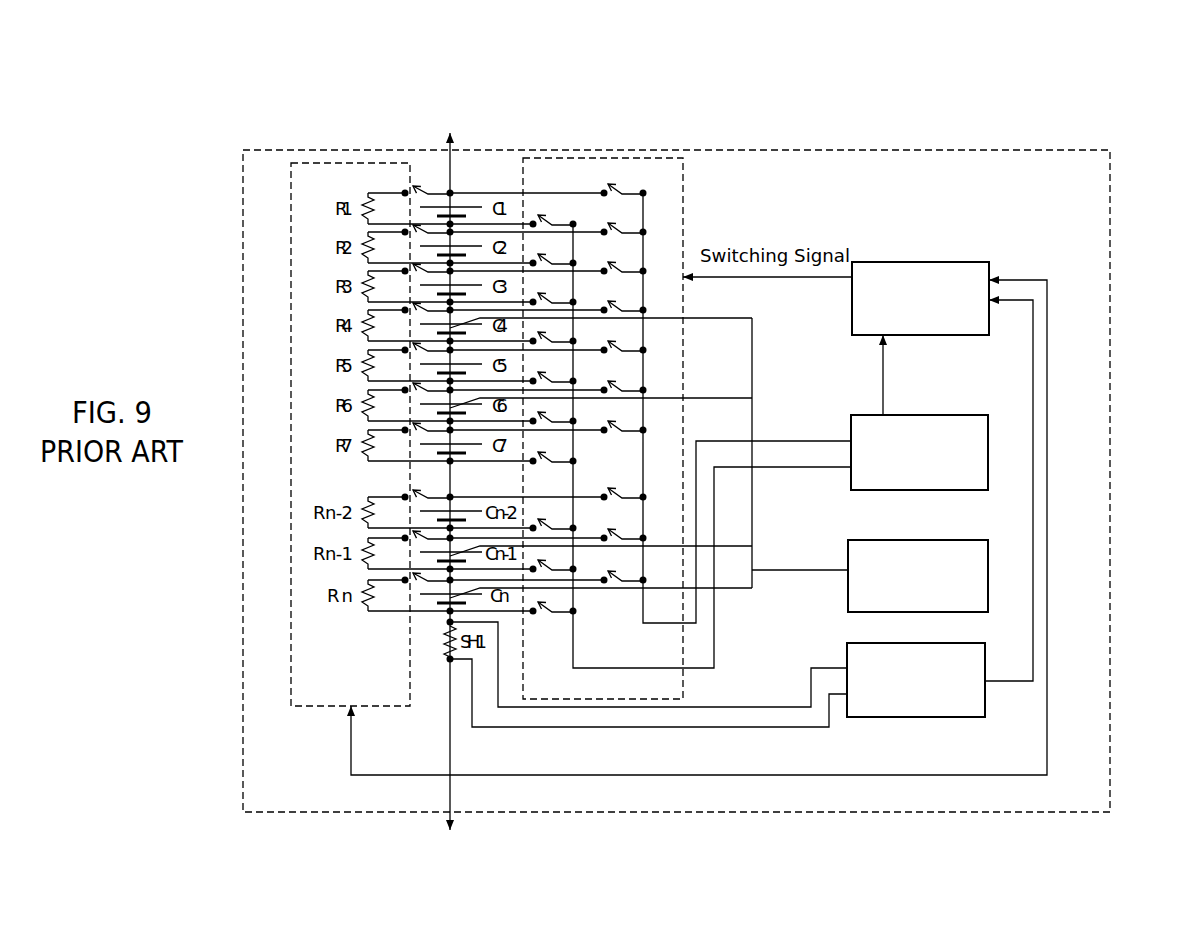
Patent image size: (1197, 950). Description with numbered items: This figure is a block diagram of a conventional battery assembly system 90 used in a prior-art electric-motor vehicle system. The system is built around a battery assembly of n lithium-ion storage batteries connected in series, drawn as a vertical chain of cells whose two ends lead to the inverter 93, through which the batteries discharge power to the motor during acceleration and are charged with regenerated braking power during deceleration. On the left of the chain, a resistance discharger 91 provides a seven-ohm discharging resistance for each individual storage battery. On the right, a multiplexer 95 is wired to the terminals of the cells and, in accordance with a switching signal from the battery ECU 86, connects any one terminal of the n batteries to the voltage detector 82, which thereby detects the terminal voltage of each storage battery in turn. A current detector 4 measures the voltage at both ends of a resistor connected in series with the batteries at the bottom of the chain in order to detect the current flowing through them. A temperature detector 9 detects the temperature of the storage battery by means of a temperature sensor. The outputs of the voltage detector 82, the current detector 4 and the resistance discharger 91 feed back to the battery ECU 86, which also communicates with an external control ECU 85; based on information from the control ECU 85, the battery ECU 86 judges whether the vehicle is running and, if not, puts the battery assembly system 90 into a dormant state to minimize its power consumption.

The battery assembly system 90 is at (1150, 185).
The resistance discharger 91 is at (316, 707).
The multiplexer 95 is at (666, 158).
The battery ECU 86 is at (955, 262).
The control ECU 85 is at (883, 130).
The voltage detector 82 is at (950, 414).
The temperature detector 9 is at (965, 540).
The current detector 4 is at (955, 718).
The inverter 93 is at (460, 479).